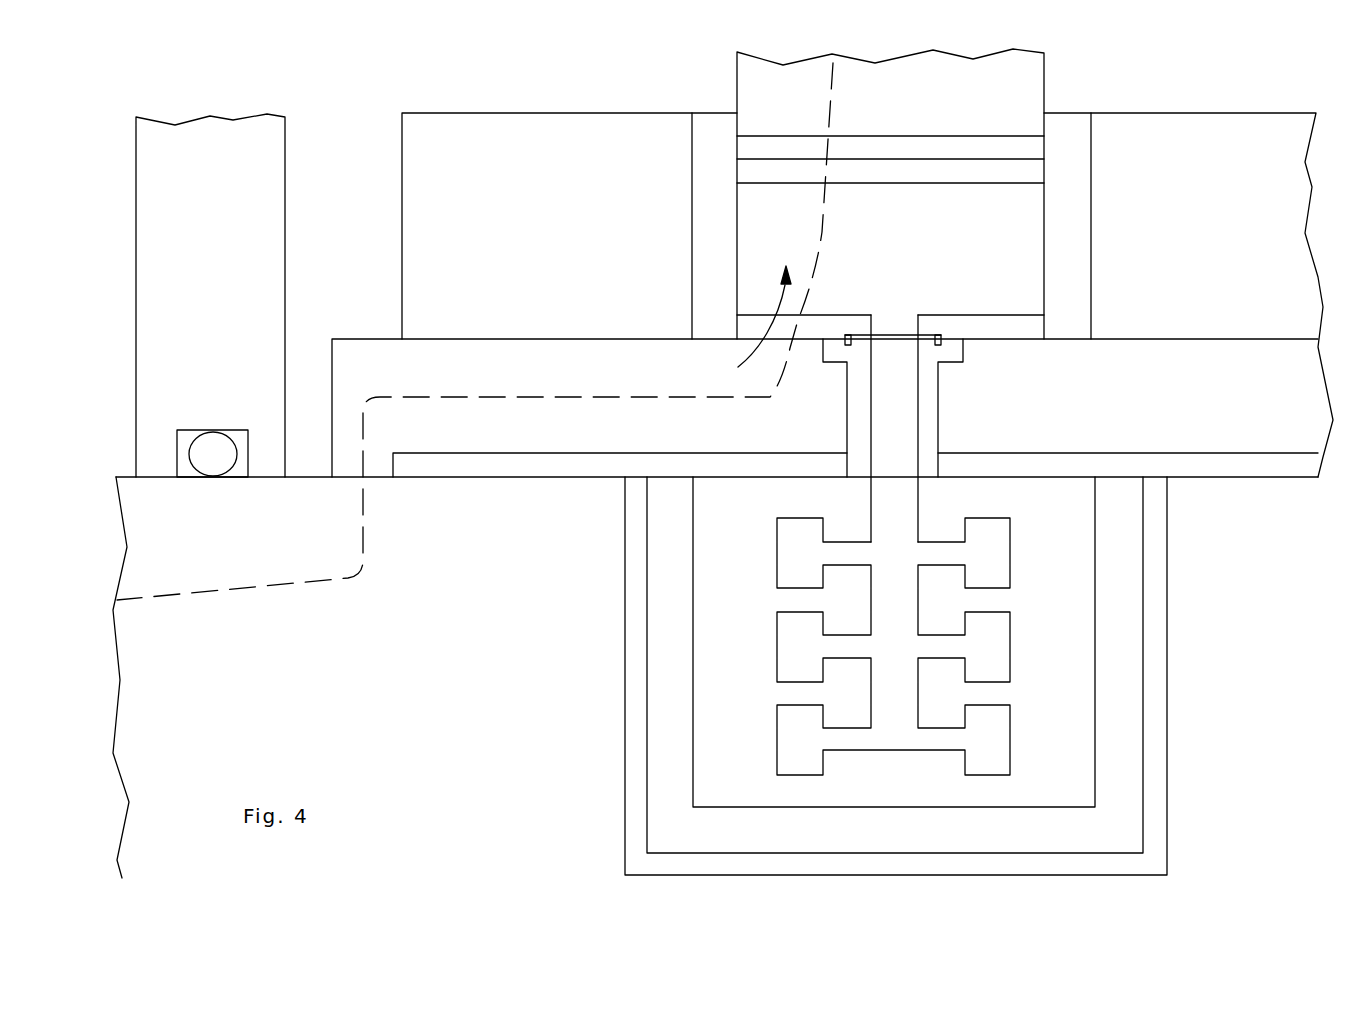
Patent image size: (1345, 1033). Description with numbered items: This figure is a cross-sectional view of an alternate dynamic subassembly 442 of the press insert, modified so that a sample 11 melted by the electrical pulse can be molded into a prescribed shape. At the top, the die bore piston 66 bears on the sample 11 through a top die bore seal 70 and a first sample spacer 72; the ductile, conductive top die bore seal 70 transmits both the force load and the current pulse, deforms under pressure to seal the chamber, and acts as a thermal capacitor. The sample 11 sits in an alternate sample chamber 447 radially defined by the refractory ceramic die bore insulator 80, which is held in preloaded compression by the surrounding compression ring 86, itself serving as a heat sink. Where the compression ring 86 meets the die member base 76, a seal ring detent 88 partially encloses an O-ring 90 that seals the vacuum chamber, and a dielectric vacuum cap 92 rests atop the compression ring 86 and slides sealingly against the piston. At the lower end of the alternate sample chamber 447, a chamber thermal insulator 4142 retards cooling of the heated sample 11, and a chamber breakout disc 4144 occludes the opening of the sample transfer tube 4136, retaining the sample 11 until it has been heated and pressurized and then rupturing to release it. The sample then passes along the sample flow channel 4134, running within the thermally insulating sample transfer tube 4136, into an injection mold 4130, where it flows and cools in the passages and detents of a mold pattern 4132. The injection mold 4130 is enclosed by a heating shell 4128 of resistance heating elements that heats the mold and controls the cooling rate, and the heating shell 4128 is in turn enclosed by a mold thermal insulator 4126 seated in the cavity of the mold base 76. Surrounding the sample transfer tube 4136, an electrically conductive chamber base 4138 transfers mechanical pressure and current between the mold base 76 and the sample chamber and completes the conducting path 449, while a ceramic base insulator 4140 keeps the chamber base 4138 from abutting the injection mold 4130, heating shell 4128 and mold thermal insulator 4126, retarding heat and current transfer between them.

The sample 11 is at (951, 236).
The die bore piston 66 is at (923, 99).
The top die bore seal 70 is at (762, 147).
The first sample spacer 72 is at (787, 175).
The die member base 76 is at (374, 695).
The die bore insulator 80 is at (707, 287).
The compression ring 86 is at (514, 233).
The seal ring detent 88 is at (245, 432).
The O-ring 90 is at (213, 447).
The vacuum cap 92 is at (218, 245).
The alternate dynamic subassembly 442 is at (360, 232).
The alternate sample chamber 447 is at (741, 325).
The fluid flow path 449 is at (538, 397).
The mold thermal insulator 4126 is at (633, 798).
The heating shell 4128 is at (668, 698).
The injection mold 4130 is at (712, 549).
The mold pattern 4132 is at (1012, 565).
The sample flow channel 4134 is at (885, 503).
The sample transfer tube 4136 is at (927, 416).
The chamber base 4138 is at (511, 434).
The base insulator 4140 is at (697, 460).
The chamber thermal insulator 4142 is at (830, 323).
The chamber breakout disc 4144 is at (887, 327).